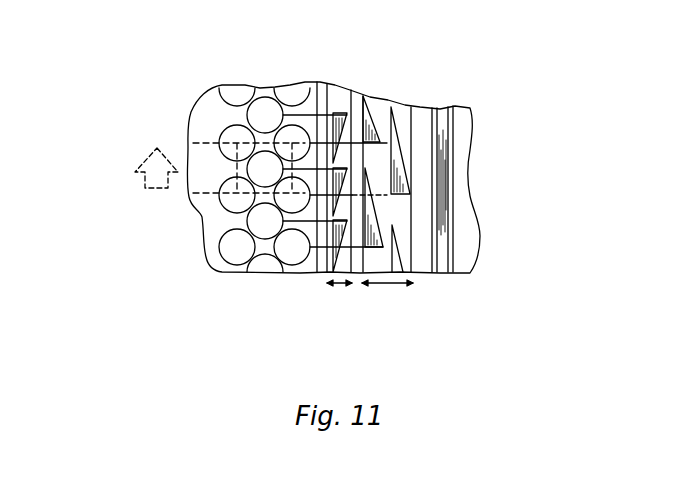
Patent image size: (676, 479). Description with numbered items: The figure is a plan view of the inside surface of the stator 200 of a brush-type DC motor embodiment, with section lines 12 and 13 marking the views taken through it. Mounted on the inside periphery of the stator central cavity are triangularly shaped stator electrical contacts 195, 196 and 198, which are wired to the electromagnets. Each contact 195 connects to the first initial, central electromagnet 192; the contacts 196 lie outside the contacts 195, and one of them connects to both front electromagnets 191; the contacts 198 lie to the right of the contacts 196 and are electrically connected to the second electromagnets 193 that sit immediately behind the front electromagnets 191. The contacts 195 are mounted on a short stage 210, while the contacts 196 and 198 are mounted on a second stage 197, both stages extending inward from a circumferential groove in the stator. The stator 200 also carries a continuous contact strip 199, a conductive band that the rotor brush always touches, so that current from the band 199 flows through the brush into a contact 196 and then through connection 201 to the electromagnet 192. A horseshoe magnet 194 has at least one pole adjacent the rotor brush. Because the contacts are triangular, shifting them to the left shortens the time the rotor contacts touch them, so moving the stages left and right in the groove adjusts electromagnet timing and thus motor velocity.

The section line 12- 12 is at (128, 171).
The section line 13- 13 is at (391, 98).
The front electromagnets 191 is at (272, 115).
The central electromagnet 192 is at (245, 176).
The second electromagnets 193 is at (247, 226).
The horseshoe magnet 194 is at (208, 140).
The stator electrical contacts 195 is at (338, 232).
The stator electrical contacts 196 is at (382, 100).
The second stage 197 is at (405, 250).
The stator electrical contacts 198 is at (404, 125).
The continuous contact strip 199 is at (447, 132).
The stator 200 is at (473, 212).
The connection 201 is at (384, 200).
The short stage 210 is at (333, 97).